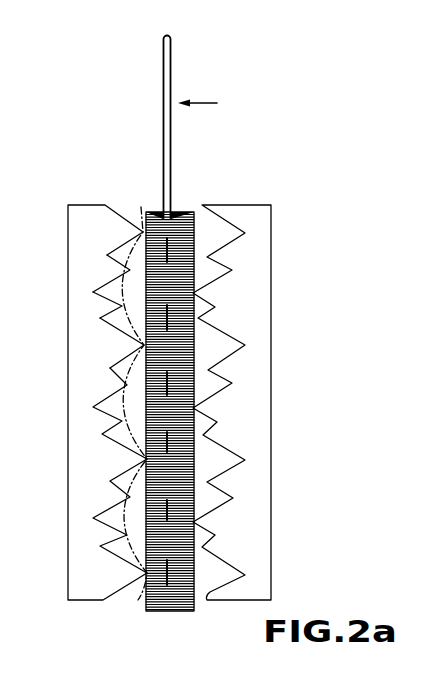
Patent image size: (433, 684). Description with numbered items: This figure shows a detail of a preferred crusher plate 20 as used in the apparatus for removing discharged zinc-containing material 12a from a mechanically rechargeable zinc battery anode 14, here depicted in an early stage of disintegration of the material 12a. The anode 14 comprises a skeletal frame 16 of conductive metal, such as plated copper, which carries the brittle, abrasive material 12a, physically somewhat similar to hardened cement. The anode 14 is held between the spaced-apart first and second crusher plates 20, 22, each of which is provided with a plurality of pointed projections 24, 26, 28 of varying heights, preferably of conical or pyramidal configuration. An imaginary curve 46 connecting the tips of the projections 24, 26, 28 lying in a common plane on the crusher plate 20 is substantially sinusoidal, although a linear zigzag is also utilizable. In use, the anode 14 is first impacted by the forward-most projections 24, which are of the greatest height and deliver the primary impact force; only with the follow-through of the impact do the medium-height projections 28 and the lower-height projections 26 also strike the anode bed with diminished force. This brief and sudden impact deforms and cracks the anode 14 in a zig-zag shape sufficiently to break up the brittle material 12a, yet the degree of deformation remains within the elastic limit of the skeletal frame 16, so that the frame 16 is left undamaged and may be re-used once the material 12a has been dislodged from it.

The skeletal frame 16 is at (171, 72).
The mechanically rechargeable zinc battery anode 14 is at (199, 92).
The discharged zinc-containing material 12a is at (185, 213).
The imaginary curve 46 is at (143, 221).
The first crusher plate 20 is at (123, 593).
The second crusher plate 22 is at (210, 603).
The forward-most projections 24 is at (143, 345).
The lower-height projections 26 is at (130, 306).
The medium-height projections 28 is at (130, 270).